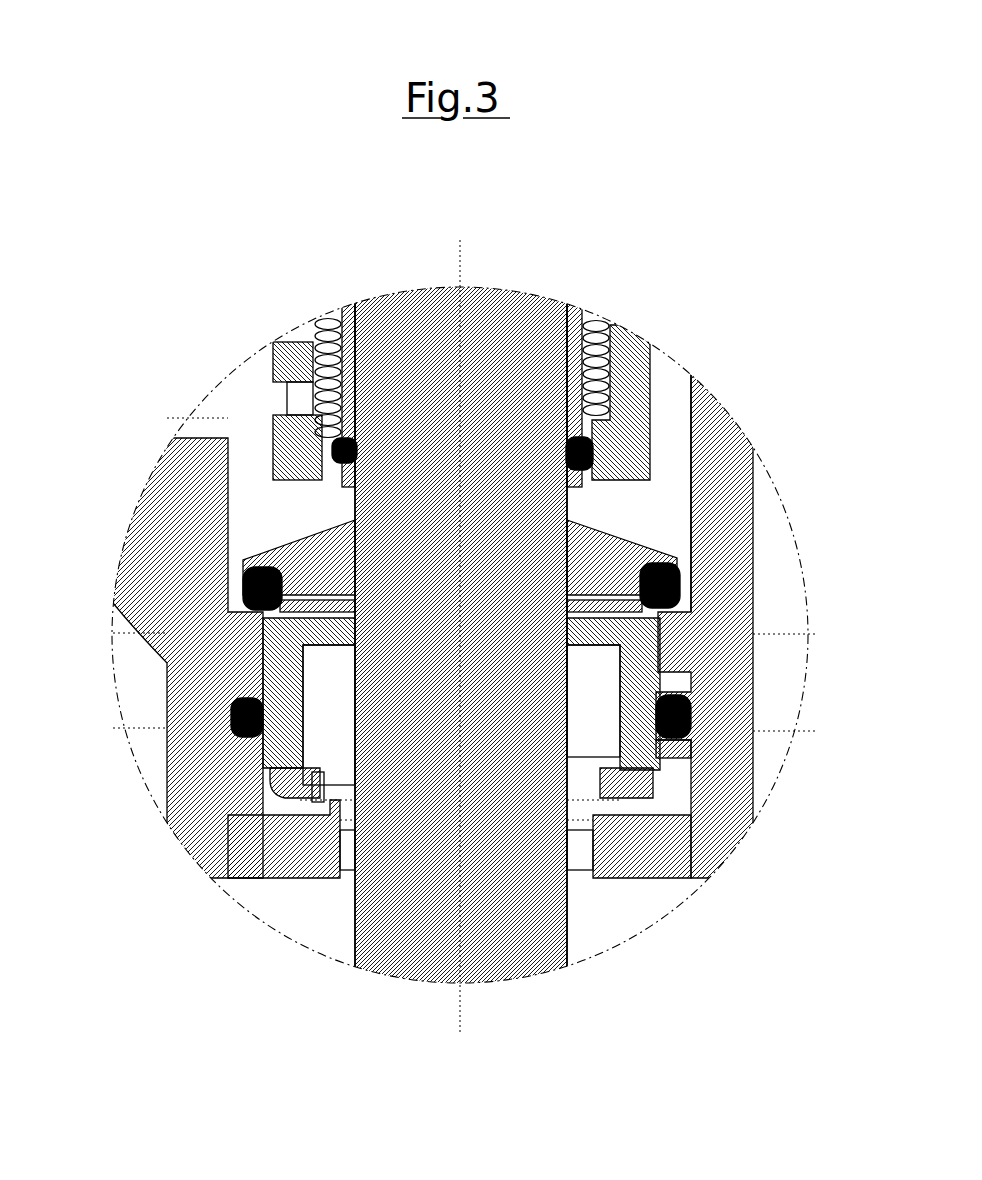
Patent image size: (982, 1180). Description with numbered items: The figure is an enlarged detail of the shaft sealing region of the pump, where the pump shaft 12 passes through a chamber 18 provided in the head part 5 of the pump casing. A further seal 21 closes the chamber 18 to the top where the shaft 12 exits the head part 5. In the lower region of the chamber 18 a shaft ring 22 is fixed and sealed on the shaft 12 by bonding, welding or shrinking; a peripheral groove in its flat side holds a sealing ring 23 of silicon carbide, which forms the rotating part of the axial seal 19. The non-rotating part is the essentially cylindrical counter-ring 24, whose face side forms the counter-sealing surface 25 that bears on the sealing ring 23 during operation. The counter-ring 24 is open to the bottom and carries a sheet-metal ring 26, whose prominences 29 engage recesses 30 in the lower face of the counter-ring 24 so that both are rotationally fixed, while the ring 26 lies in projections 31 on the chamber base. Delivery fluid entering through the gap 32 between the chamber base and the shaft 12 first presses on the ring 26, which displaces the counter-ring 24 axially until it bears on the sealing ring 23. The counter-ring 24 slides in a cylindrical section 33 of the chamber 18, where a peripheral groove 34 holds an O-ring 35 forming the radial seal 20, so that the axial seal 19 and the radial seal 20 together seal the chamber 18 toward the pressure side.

The head part 5 is at (725, 477).
The pump shaft 12 is at (522, 320).
The chamber 18 is at (680, 417).
The axial seal 19 is at (692, 585).
The radial seal 20 is at (702, 704).
The seal 21 is at (654, 378).
The shaft ring 22 is at (303, 545).
The sealing ring 23 is at (258, 575).
The counter-ring 24 is at (167, 670).
The counter-sealing surface 25 is at (262, 622).
The sheet-metal ring 26 is at (305, 785).
The prominences 29 is at (275, 773).
The recesses 30 is at (657, 803).
The projections 31 is at (317, 797).
The gap 32 is at (583, 855).
The cylindrical section 33 is at (657, 807).
The peripheral groove 34 is at (690, 740).
The O-ring 35 is at (690, 727).